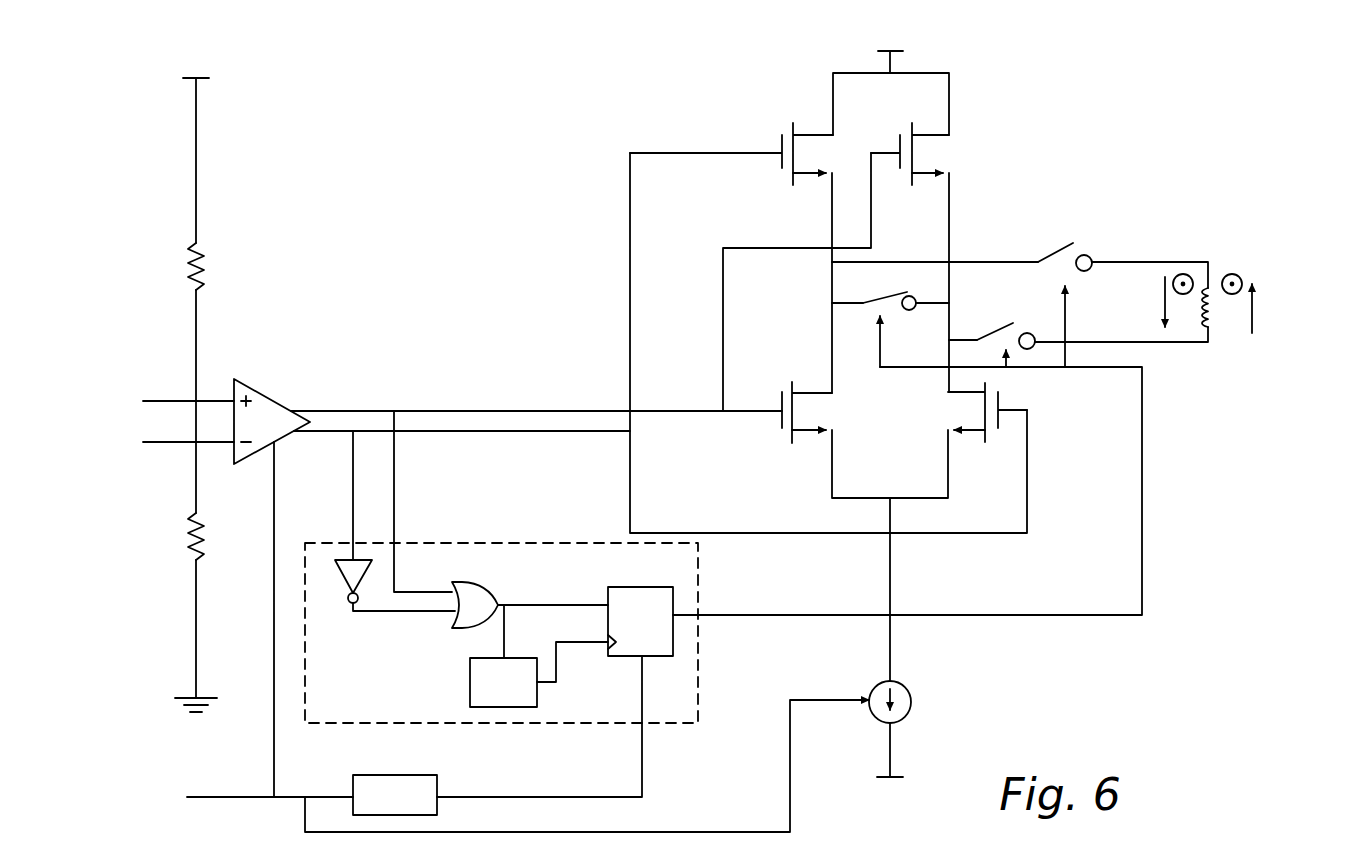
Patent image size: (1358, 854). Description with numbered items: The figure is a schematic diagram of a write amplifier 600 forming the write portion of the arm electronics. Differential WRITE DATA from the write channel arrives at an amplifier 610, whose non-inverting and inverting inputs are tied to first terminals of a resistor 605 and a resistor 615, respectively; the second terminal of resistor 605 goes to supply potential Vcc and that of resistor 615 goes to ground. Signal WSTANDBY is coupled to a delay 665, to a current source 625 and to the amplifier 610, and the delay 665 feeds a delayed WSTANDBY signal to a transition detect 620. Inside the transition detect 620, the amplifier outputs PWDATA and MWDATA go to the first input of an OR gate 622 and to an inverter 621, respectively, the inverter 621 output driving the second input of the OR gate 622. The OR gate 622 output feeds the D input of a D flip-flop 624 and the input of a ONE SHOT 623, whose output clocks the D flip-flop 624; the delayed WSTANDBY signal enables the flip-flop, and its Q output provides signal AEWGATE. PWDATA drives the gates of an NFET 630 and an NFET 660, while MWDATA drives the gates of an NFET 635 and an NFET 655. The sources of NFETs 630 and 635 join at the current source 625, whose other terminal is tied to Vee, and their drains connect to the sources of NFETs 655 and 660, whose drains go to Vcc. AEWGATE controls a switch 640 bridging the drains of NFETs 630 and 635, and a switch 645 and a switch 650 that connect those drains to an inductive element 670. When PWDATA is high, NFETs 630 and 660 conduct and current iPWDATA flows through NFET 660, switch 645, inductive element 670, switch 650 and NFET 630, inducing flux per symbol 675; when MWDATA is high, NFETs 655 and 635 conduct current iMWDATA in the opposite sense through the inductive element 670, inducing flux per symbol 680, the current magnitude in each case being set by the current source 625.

The write amplifier 600 is at (1026, 685).
The resistor 605 is at (207, 263).
The amplifier 610 is at (270, 393).
The resistor 615 is at (207, 535).
The transition detect 620 is at (501, 633).
The inverter 621 is at (348, 588).
The OR gate 622 is at (488, 583).
The ONE SHOT 623 is at (463, 674).
The D flip-flop 624 is at (628, 587).
The current source 625 is at (876, 684).
The NFET 630 is at (781, 446).
The NFET 635 is at (990, 446).
The switch 640 is at (882, 291).
The switch 645 is at (992, 325).
The switch 650 is at (1050, 244).
The NFET 655 is at (781, 190).
The NFET 660 is at (899, 190).
The delay 665 is at (400, 775).
The inductive element 670 is at (1215, 333).
The symbol 675 is at (1183, 273).
The symbol 680 is at (1234, 273).